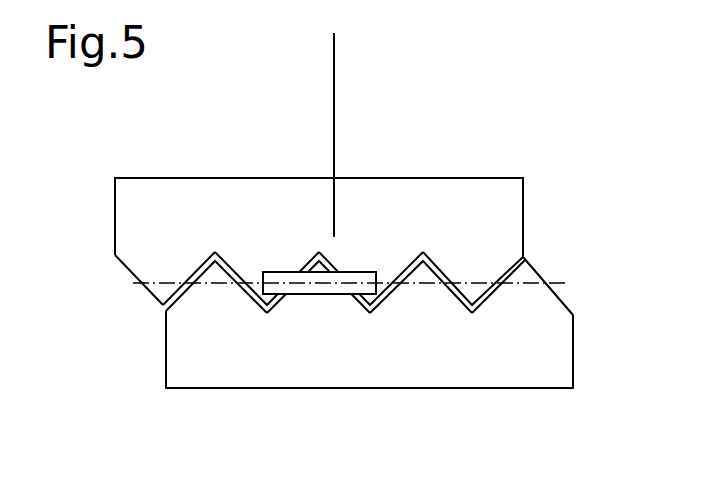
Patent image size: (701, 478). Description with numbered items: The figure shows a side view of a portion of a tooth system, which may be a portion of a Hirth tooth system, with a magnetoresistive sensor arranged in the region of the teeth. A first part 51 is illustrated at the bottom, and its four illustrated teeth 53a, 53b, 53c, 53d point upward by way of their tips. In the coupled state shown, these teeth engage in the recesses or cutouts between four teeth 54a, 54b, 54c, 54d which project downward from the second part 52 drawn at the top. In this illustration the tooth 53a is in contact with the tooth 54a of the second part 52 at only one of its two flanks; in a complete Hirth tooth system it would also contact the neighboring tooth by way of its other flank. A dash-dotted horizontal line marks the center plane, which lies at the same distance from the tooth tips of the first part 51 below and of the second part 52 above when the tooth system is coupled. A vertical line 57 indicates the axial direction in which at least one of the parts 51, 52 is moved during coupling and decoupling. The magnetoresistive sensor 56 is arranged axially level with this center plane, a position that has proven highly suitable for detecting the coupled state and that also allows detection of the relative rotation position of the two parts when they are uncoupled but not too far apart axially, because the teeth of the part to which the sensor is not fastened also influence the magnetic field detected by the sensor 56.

The first part 51 is at (573, 351).
The second part 52 is at (523, 213).
The tooth 53a is at (530, 292).
The tooth 53b is at (423, 288).
The tooth 53c is at (304, 293).
The tooth 53d is at (208, 297).
The tooth 54a is at (470, 275).
The tooth 54b is at (383, 275).
The tooth 54c is at (252, 270).
The tooth 54d is at (167, 276).
The magnetoresistive sensor 56 is at (332, 289).
The axial direction line 57 is at (334, 98).